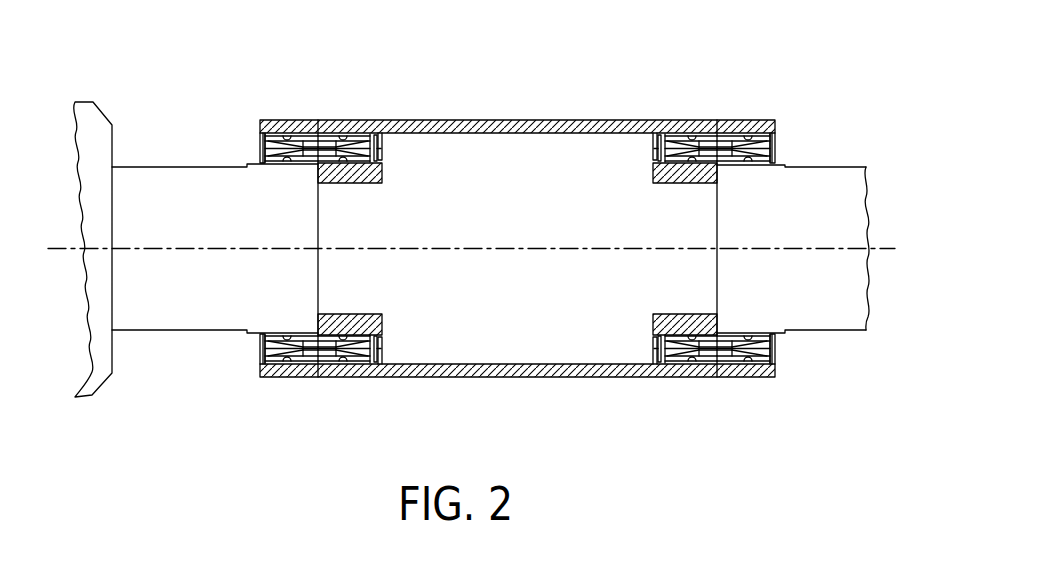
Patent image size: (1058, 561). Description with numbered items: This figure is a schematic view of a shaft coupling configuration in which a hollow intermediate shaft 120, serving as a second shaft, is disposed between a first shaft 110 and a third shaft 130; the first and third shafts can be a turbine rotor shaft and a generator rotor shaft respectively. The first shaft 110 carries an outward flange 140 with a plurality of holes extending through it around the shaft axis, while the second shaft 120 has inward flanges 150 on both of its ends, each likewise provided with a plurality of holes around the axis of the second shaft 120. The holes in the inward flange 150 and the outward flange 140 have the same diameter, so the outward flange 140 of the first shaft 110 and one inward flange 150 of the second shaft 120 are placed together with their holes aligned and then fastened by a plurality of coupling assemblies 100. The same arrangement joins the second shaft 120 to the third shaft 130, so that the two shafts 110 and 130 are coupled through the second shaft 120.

The coupling assembly 100 is at (330, 140).
The first shaft 110 is at (175, 293).
The hollow intermediate shaft 120 is at (425, 380).
The third shaft 130 is at (838, 295).
The outward flange 140 is at (287, 378).
The inward flange 150 is at (342, 378).